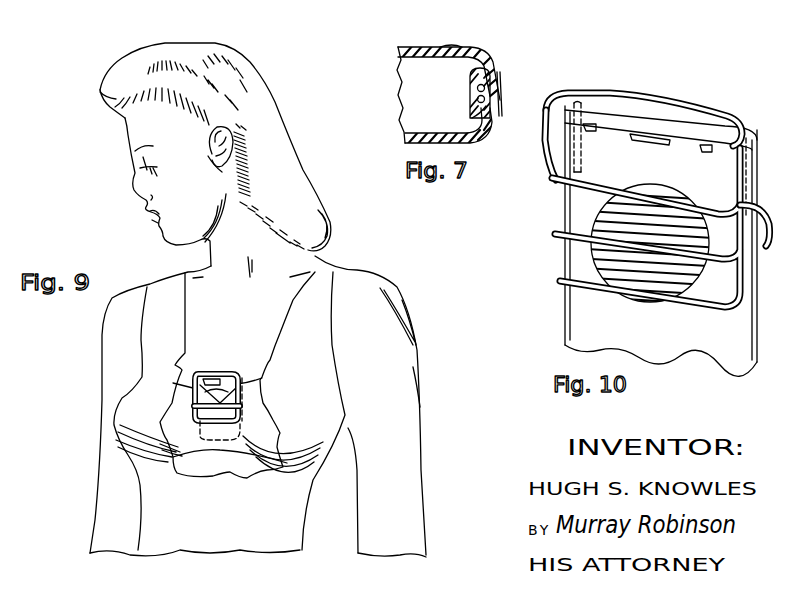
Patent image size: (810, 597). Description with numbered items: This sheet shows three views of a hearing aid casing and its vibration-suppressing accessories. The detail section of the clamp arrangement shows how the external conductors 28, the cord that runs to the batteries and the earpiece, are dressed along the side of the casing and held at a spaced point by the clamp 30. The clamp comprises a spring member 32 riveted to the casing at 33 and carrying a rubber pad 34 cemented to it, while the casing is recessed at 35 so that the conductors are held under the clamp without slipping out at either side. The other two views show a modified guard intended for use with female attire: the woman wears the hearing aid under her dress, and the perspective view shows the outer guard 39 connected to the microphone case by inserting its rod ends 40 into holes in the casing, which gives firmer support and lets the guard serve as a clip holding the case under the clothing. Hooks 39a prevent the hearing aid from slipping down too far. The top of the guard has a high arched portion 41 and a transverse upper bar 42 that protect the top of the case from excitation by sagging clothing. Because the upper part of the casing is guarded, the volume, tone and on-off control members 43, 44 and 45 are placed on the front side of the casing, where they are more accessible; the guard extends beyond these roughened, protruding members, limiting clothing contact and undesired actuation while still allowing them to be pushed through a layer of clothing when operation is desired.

In FIG. 7, the external conductors 28 is at (490, 90).
In FIG. 7, the clamp 30 is at (501, 106).
In FIG. 7, the spring member 32 is at (467, 62).
In FIG. 7, the rivet point 33 is at (447, 47).
In FIG. 7, the rubber pad 34 is at (477, 112).
In FIG. 7, the casing recess 35 is at (472, 97).
In FIG. 9, the outer guard 39 is at (240, 400).
In FIG. 10, the outer guard 39 is at (556, 234).
In FIG. 10, the hooks 39a is at (763, 233).
In FIG. 10, the rod ends 40 is at (578, 166).
In FIG. 10, the high arched portion 41 is at (547, 141).
In FIG. 10, the transverse upper bar 42 is at (668, 100).
In FIG. 10, the volume control member 43 is at (645, 146).
In FIG. 10, the tone control member 44 is at (590, 131).
In FIG. 10, the on-off control member 45 is at (707, 153).